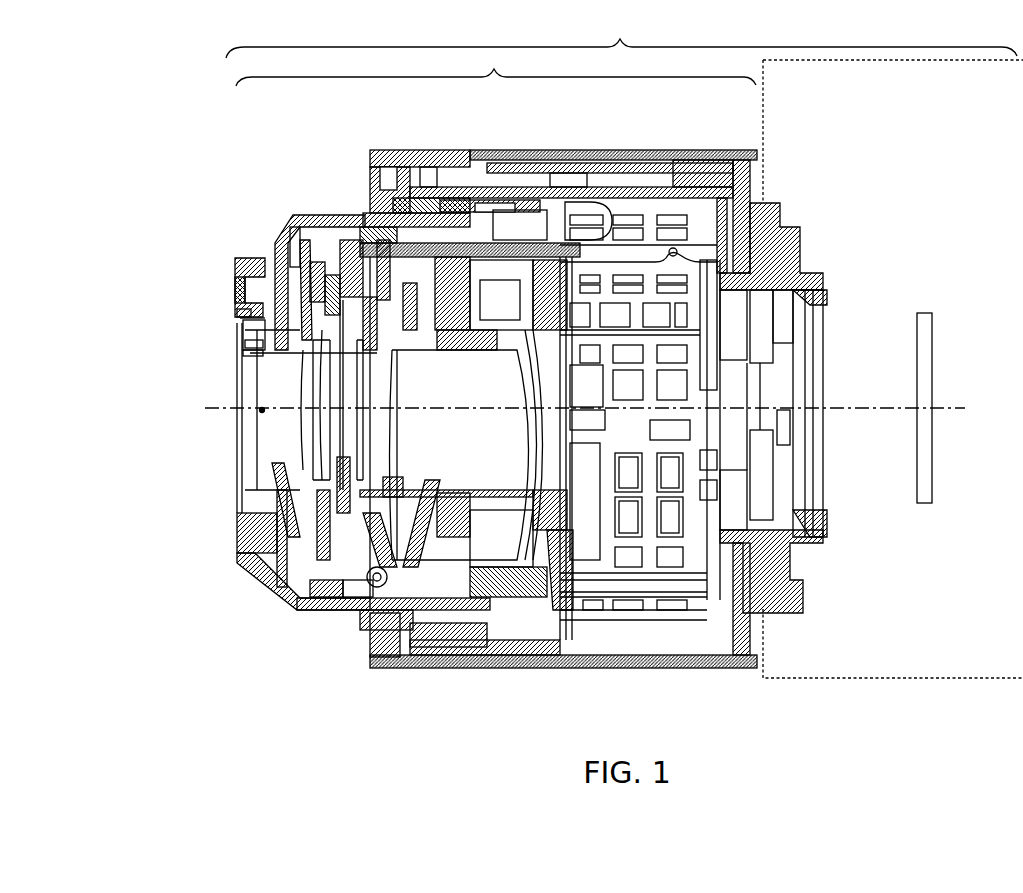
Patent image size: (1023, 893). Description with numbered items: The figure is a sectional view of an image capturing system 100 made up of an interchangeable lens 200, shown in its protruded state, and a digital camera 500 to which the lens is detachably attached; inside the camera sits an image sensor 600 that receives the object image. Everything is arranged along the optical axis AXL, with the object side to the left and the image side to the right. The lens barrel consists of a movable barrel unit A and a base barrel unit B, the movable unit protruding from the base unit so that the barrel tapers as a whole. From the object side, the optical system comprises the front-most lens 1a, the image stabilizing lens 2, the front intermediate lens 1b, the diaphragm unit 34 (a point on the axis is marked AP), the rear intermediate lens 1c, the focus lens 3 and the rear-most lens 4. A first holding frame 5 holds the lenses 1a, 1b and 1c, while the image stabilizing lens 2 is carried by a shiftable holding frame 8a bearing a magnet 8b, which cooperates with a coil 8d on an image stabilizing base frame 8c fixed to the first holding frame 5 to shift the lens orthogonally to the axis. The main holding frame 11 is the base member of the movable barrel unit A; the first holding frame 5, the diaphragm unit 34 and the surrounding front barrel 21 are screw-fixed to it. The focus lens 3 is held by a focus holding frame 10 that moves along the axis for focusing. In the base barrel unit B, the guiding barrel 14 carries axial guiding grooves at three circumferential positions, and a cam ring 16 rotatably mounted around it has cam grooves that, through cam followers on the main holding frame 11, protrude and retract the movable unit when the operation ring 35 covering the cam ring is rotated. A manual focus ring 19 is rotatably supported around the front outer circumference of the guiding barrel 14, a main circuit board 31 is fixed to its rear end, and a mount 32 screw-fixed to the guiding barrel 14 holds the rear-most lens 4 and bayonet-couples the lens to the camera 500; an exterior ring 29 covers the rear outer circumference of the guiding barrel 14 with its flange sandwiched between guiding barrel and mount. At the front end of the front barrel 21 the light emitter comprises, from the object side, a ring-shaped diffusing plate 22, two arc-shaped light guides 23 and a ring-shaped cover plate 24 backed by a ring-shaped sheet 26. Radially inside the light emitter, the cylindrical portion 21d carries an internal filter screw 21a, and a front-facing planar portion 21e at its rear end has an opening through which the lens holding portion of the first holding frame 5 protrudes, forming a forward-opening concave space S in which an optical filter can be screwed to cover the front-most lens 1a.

The camera system 100 is at (621, 37).
The interchangeable lens 200 is at (496, 66).
The digital camera 500 is at (759, 73).
The image sensor 600 is at (930, 329).
The optical axis AXL is at (212, 406).
The cam ring 16 is at (536, 150).
The operation ring 35 is at (612, 149).
The guiding barrel 14 is at (676, 151).
The exterior ring 29 is at (719, 151).
The manual focus ring 19 is at (424, 150).
The main circuit board 31 is at (733, 672).
The focus holding frame 10 is at (553, 655).
The mount 32 is at (777, 240).
The rear-most lens 4 is at (827, 537).
The cover plate 24 is at (266, 250).
The sheet 26 is at (283, 222).
The front barrel 21 is at (246, 265).
The diffusing plate 22 is at (236, 296).
The light guides 23 is at (238, 317).
The cylindrical portion 21d is at (240, 318).
The filter screw 21a is at (258, 330).
The planar portion 21e is at (257, 343).
The concave space S is at (250, 352).
The movable barrel unit A is at (211, 193).
The base barrel unit B is at (628, 141).
The front-most lens 1a is at (275, 396).
The image stabilizing lens 2 is at (330, 395).
The front intermediate lens 1b is at (350, 455).
The aperture position AP is at (260, 412).
The rear intermediate lens 1c is at (485, 465).
The shiftable holding frame 8a is at (312, 272).
The magnet 8b is at (322, 268).
The image stabilizing base frame 8c is at (353, 305).
The coil 8d is at (340, 287).
The first holding frame 5 is at (430, 517).
The diaphragm unit 34 is at (348, 573).
The main holding frame 11 is at (483, 647).
The focus lens 3 is at (553, 443).